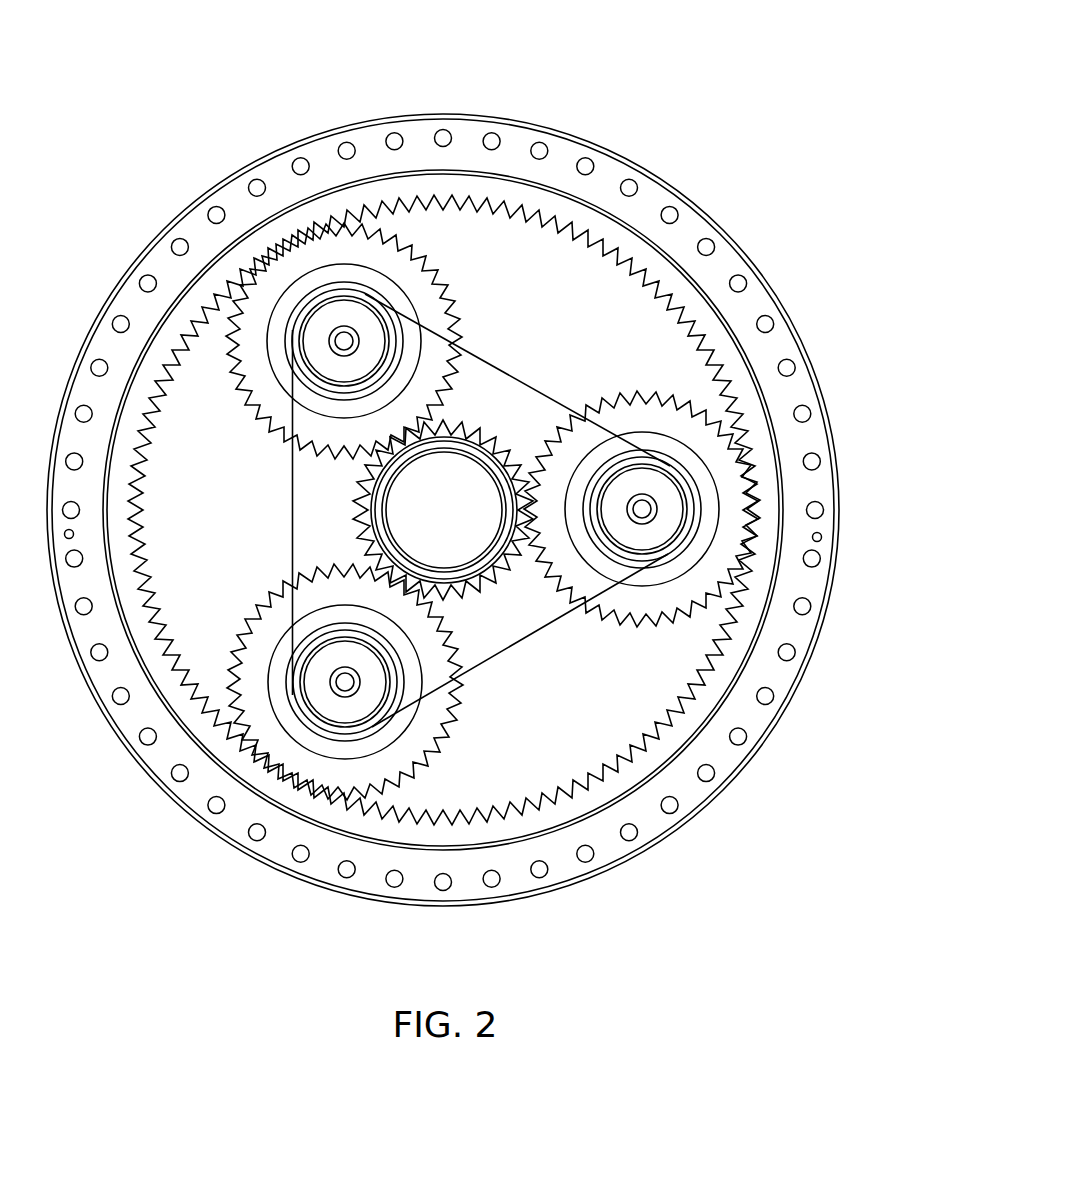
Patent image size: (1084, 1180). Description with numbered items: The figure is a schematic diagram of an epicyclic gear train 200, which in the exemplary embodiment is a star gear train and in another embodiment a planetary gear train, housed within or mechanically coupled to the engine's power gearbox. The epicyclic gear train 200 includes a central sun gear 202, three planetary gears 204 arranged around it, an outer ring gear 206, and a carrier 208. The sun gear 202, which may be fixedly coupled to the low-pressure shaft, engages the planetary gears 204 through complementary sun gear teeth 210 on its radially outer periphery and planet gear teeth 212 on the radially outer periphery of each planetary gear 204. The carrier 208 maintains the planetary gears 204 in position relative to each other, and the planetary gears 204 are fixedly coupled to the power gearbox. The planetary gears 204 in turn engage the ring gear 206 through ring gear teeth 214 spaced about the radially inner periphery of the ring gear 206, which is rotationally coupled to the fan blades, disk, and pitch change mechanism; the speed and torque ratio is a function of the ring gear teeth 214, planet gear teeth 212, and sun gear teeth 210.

The epicyclic gear train 200 is at (648, 60).
The sun gear 202 is at (472, 542).
The planetary gears 204 is at (307, 316).
The ring gear 206 is at (513, 120).
The carrier 208 is at (499, 656).
The sun gear teeth 210 is at (360, 506).
The planet gear teeth 212 is at (460, 282).
The ring gear teeth 214 is at (660, 300).